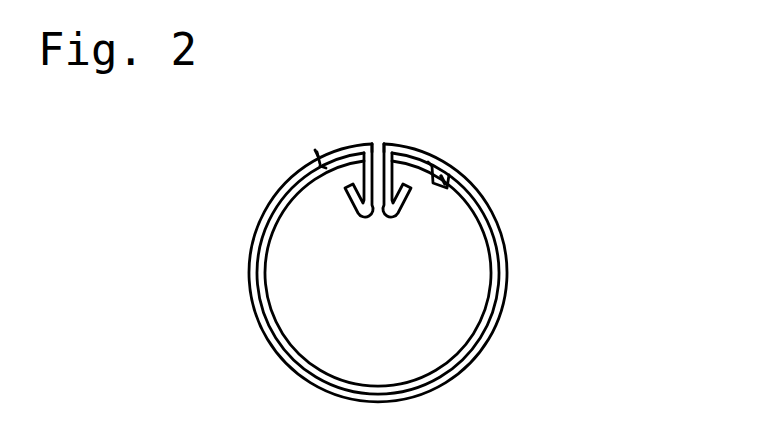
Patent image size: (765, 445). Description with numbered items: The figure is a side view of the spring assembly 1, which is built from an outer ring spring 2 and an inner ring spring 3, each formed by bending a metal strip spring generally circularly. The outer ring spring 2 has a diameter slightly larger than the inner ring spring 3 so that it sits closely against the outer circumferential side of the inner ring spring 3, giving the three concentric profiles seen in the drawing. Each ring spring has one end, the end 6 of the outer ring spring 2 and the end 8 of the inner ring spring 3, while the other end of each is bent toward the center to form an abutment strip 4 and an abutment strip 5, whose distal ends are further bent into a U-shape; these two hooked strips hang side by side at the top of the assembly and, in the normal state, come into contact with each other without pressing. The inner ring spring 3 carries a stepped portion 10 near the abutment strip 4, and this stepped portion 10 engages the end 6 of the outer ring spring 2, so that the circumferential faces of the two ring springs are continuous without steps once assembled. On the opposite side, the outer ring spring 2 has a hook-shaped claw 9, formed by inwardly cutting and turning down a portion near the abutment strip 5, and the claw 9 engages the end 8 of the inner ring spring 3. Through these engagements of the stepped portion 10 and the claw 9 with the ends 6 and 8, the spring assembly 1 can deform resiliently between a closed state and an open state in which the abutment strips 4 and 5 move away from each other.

The spring assembly 1 is at (500, 199).
The outer ring spring 2 is at (508, 266).
The inner ring spring 3 is at (355, 143).
The abutment strip 4 is at (347, 185).
The abutment strip 5 is at (413, 183).
The end of outer ring spring 6 is at (312, 156).
The end of inner ring spring 8 is at (448, 187).
The hook-shaped claw 9 is at (424, 153).
The stepped portion 10 is at (316, 153).